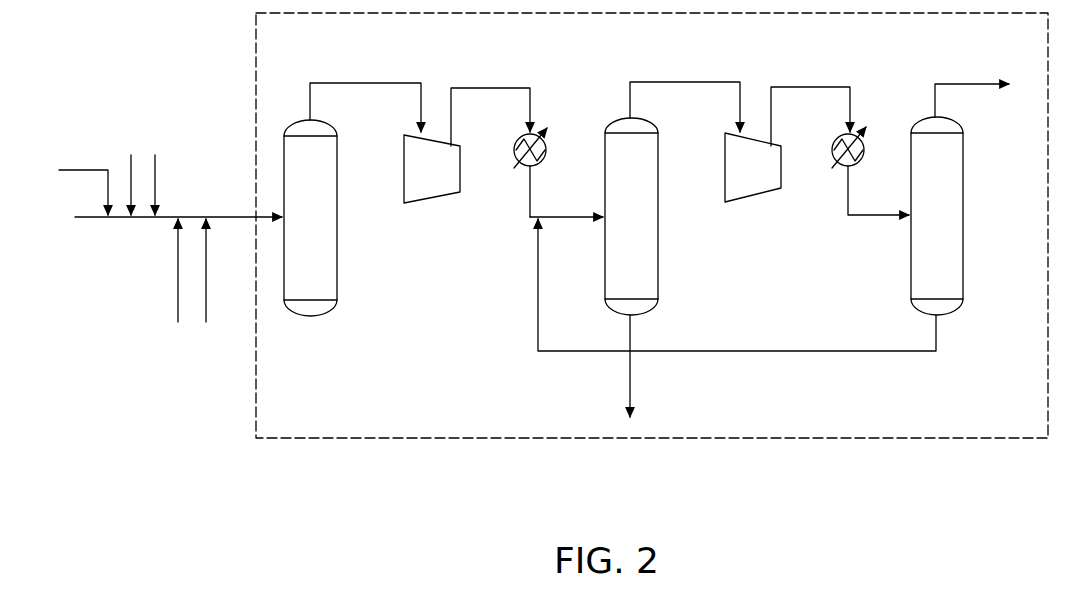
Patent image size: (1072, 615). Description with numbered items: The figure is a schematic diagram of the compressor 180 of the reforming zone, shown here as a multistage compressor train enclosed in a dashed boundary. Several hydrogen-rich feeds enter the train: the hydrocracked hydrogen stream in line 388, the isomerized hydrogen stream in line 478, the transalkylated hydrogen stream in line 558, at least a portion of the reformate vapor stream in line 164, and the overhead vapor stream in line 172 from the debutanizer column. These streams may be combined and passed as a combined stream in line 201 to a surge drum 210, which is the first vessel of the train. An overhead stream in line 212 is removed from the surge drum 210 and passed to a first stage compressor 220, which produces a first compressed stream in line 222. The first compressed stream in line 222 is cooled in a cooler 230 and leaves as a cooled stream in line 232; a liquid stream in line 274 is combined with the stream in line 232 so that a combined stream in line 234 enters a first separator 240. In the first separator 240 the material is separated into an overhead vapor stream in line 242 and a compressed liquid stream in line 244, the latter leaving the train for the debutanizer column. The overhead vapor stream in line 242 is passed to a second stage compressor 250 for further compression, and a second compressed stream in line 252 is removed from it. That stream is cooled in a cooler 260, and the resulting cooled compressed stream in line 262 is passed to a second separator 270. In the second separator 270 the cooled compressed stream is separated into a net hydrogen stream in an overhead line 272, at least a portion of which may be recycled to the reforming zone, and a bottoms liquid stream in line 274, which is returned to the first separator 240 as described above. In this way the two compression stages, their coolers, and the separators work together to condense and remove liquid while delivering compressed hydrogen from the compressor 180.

The compressor 180 is at (254, 22).
The hydrocracked hydrogen stream line 388 is at (86, 170).
The isomerized hydrogen stream line 478 is at (127, 162).
The transalkylated hydrogen stream line 558 is at (178, 142).
The reformate vapor stream line 164 is at (176, 268).
The overhead vapor stream line 172 is at (208, 268).
The combined stream line 201 is at (229, 212).
The surge drum 210 is at (339, 207).
The overhead stream line 212 is at (384, 81).
The first stage compressor 220 is at (455, 191).
The first compressed stream line 222 is at (458, 86).
The cooler 230 is at (540, 164).
The cooled first compressed stream line 232 is at (528, 178).
The combined stream line 234 is at (575, 219).
The first separator 240 is at (660, 258).
The overhead vapor stream line 242 is at (734, 80).
The compressed liquid stream line 244 is at (635, 396).
The second stage compressor 250 is at (782, 190).
The second compressed stream line 252 is at (836, 84).
The cooler 260 is at (866, 148).
The cooled compressed stream line 262 is at (896, 219).
The second separator 270 is at (965, 220).
The net hydrogen stream line 272 is at (961, 84).
The bottoms liquid stream line 274 is at (737, 285).